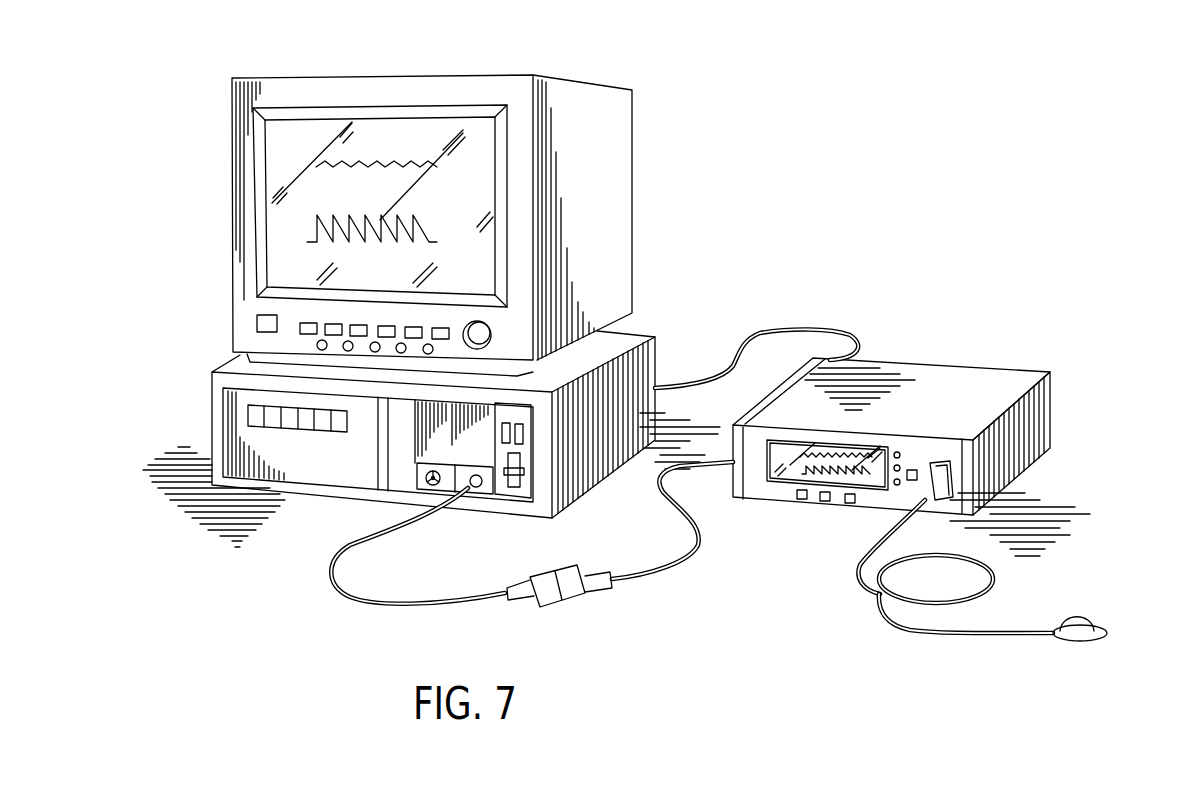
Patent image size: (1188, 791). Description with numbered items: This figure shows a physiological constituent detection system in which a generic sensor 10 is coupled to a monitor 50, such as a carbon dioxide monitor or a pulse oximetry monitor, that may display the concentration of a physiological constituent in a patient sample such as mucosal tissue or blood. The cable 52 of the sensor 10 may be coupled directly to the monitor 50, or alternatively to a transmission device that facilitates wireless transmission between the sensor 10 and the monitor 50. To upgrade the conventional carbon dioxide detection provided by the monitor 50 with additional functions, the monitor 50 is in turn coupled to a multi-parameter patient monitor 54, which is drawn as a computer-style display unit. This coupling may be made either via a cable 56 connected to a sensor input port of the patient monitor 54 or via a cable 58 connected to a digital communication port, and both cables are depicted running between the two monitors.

The sensor 10 is at (1112, 646).
The monitor 50 is at (953, 370).
The cable 52 is at (883, 622).
The multi-parameter patient monitor 54 is at (585, 88).
The cable 56 is at (648, 578).
The cable 58 is at (800, 328).